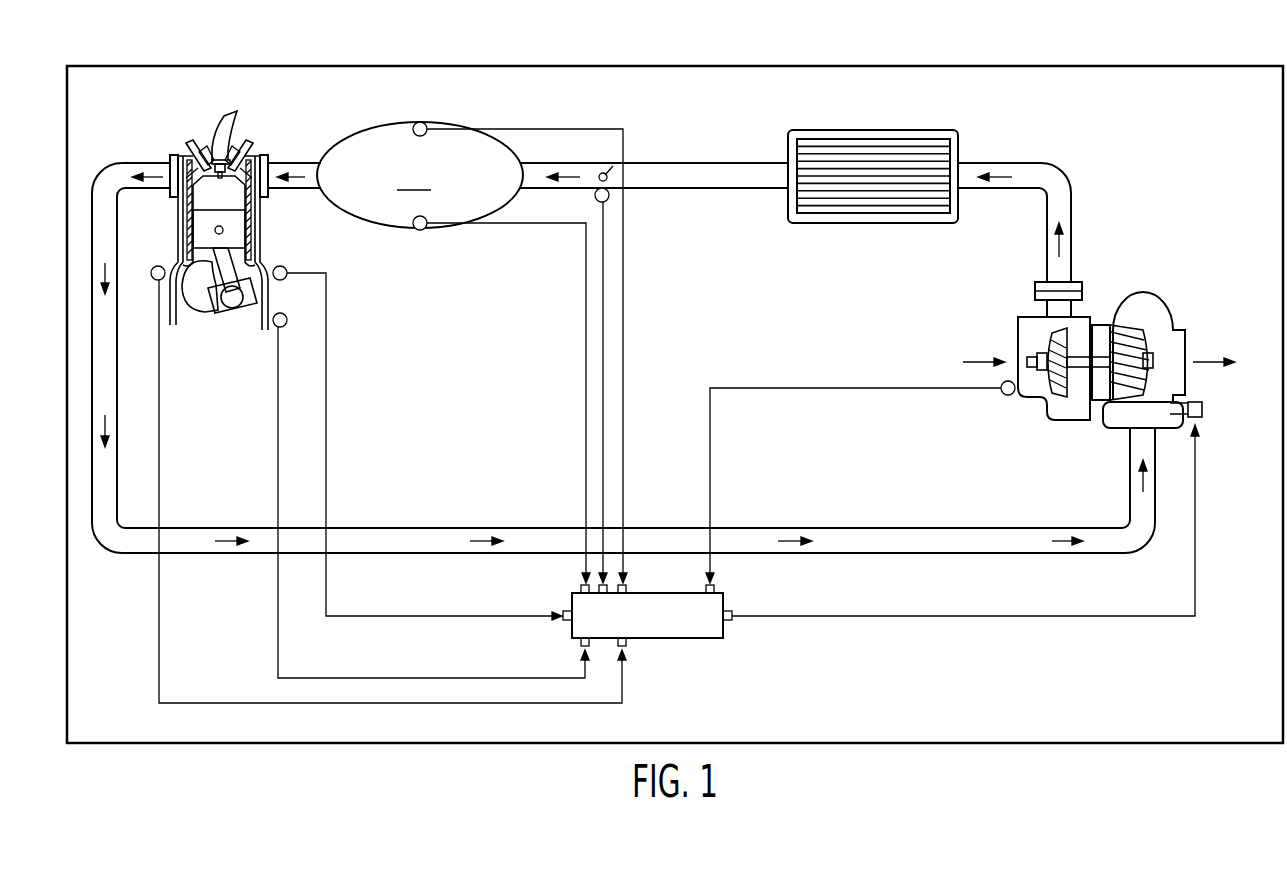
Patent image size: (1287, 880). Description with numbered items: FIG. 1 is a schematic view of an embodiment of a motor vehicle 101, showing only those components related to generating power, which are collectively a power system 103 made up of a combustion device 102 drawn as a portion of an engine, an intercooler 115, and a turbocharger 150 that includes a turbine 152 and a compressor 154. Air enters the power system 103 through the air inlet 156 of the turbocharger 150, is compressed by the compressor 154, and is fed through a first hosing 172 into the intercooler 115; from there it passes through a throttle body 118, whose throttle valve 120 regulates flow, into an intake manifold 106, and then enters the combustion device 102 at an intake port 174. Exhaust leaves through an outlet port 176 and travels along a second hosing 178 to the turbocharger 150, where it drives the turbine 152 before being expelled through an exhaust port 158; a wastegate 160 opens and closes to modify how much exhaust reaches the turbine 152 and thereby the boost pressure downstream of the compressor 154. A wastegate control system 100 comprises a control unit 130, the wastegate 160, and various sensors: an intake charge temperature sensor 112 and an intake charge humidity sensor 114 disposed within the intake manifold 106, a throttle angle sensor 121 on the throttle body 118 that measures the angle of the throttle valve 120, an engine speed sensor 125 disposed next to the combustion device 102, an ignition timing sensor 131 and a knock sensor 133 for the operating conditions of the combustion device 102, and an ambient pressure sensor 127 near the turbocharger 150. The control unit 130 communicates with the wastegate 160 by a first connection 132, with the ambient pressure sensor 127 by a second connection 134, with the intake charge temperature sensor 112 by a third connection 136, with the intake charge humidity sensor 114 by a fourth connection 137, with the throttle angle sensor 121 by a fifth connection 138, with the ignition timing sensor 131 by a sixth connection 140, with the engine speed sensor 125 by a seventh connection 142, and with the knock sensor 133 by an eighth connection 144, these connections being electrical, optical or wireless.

The wastegate control system 100 is at (798, 593).
The motor vehicle 101 is at (1190, 66).
The combustion device 102 is at (208, 132).
The power system 103 is at (1188, 139).
The intake manifold 106 is at (420, 175).
The intake charge temperature sensor 112 is at (415, 124).
The intake charge humidity sensor 114 is at (415, 228).
The intercooler 115 is at (932, 130).
The throttle body 118 is at (665, 162).
The throttle valve 120 is at (606, 171).
The throttle angle sensor 121 is at (610, 197).
The engine speed sensor 125 is at (158, 265).
The ambient pressure sensor 127 is at (1010, 396).
The control unit 130 is at (693, 639).
The ignition timing sensor 131 is at (281, 266).
The first connection 132 is at (1197, 527).
The knock sensor 133 is at (287, 319).
The second connection 134 is at (740, 388).
The third connection 136 is at (624, 452).
The fourth connection 137 is at (585, 461).
The fifth connection 138 is at (604, 468).
The sixth connection 140 is at (327, 437).
The seventh connection 142 is at (160, 627).
The eighth connection 144 is at (378, 677).
The turbocharger 150 is at (1107, 338).
The turbine 152 is at (1127, 317).
The compressor 154 is at (1045, 341).
The air inlet 156 is at (1020, 316).
The exhaust port 158 is at (1186, 342).
The wastegate 160 is at (1203, 412).
The first hosing 172 is at (1073, 205).
The intake port 174 is at (268, 157).
The outlet port 176 is at (170, 157).
The second hosing 178 is at (876, 528).